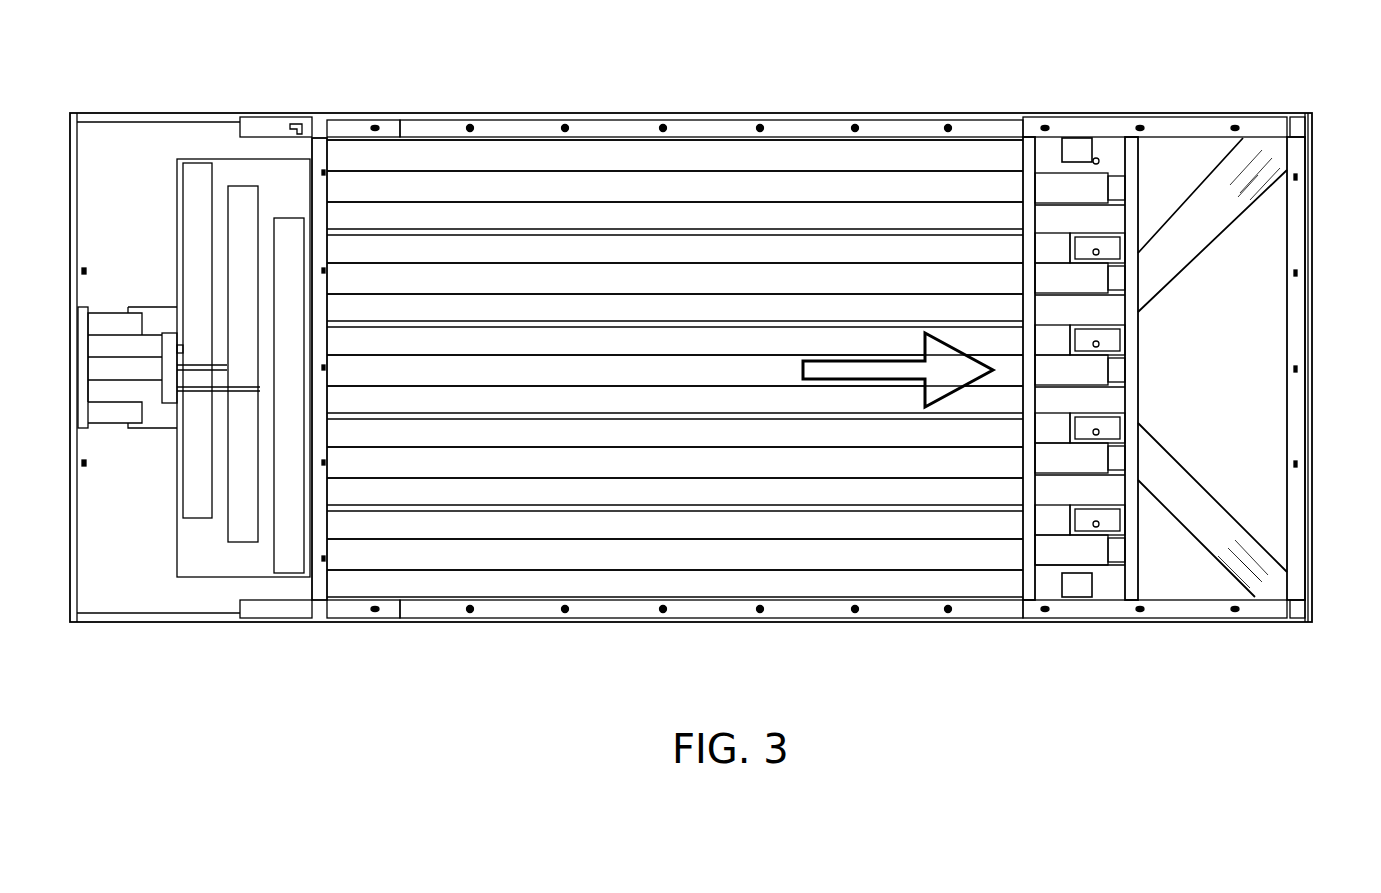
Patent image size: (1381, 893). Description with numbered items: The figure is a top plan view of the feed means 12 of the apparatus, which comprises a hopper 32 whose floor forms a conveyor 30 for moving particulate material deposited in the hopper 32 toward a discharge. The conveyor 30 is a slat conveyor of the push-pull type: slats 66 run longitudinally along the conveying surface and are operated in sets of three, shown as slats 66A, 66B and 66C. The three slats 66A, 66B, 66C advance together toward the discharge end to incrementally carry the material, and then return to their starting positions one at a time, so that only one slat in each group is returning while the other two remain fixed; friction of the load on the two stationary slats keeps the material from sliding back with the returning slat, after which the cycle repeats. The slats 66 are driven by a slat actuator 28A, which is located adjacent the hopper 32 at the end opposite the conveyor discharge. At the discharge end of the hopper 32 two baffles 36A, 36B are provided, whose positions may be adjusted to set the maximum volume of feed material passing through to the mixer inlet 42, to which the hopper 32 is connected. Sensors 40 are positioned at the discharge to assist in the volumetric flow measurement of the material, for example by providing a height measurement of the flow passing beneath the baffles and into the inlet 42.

The feed means 12 is at (343, 84).
The slat actuator 28A is at (165, 240).
The conveyor 30 is at (438, 178).
The slat 66C is at (565, 220).
The slat 66A is at (710, 160).
The slat 66B is at (820, 195).
The slats 66 is at (570, 415).
The baffle 36A is at (1033, 185).
The sensor 40 is at (1075, 148).
The baffle 36B is at (1160, 195).
The inlet 42 is at (1222, 341).
The hopper 32 is at (1310, 396).